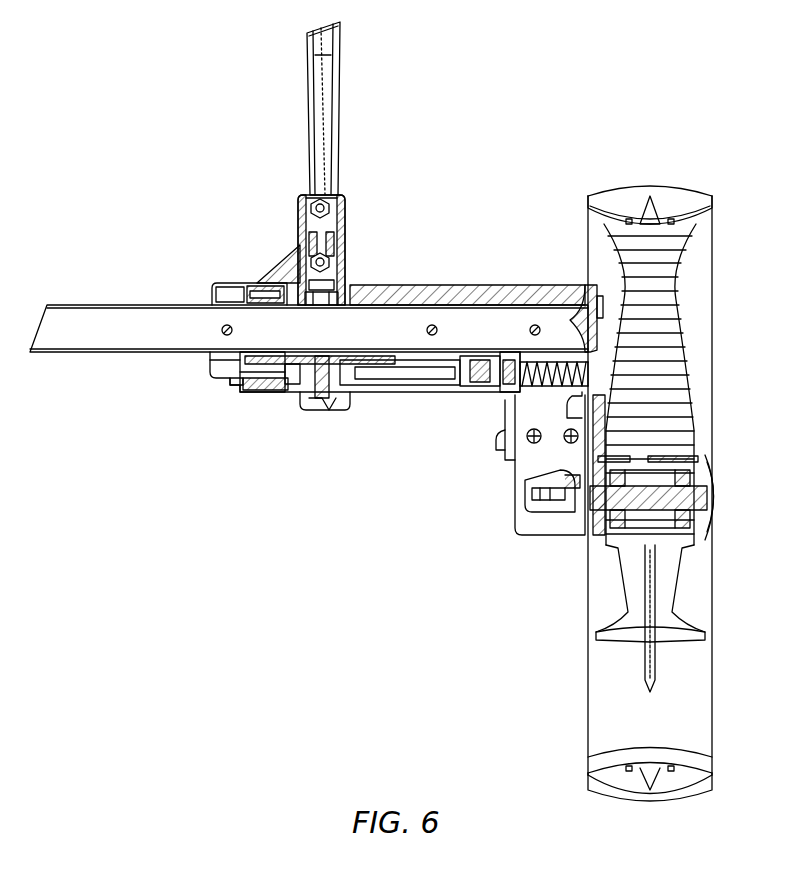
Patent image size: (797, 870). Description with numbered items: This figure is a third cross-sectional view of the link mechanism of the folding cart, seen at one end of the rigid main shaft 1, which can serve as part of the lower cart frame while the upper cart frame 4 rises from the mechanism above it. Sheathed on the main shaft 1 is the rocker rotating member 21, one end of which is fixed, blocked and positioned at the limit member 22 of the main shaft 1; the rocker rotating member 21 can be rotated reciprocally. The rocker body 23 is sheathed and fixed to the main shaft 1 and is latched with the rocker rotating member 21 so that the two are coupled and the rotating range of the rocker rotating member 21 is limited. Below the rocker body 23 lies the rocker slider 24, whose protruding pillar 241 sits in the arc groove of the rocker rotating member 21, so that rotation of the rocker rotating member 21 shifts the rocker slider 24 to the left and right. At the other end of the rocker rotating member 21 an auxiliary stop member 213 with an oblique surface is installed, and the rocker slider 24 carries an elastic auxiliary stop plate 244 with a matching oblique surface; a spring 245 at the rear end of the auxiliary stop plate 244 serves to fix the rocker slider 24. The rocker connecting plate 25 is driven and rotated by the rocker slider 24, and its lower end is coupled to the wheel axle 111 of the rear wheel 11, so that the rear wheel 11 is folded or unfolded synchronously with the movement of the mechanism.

The main shaft 1 is at (108, 317).
The upper cart frame 4 is at (325, 110).
The rear wheel 11 is at (618, 716).
The wheel axle 111 is at (645, 505).
The rocker rotating member 21 is at (341, 262).
The limit member 22 is at (232, 292).
The rocker body 23 is at (447, 297).
The rocker slider 24 is at (446, 390).
The auxiliary stop member 213 is at (258, 392).
The protruding pillar 241 is at (313, 392).
The auxiliary stop plate 244 is at (487, 390).
The spring 245 is at (562, 370).
The rocker connecting plate 25 is at (535, 465).